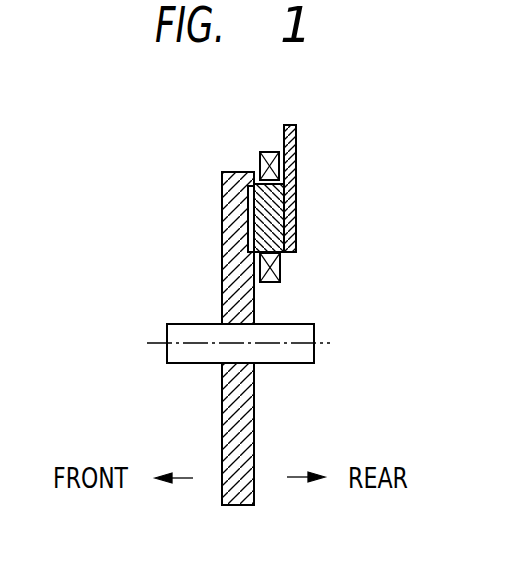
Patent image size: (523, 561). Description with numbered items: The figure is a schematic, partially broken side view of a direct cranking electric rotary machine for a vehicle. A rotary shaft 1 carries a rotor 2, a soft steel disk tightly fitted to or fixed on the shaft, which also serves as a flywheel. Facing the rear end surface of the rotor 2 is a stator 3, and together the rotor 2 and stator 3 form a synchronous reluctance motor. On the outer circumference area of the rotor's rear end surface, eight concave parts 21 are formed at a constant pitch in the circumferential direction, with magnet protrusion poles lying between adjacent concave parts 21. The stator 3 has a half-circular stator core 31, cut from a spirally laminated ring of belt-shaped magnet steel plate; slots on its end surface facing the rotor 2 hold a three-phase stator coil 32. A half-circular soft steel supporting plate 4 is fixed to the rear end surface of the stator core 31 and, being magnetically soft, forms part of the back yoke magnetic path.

The rotary shaft 1 is at (185, 357).
The rotor 2 is at (237, 278).
The concave part 21 is at (252, 215).
The stator 3 is at (229, 180).
The stator core 31 is at (277, 213).
The stator coil 32 is at (260, 156).
The supporting plate 4 is at (297, 145).